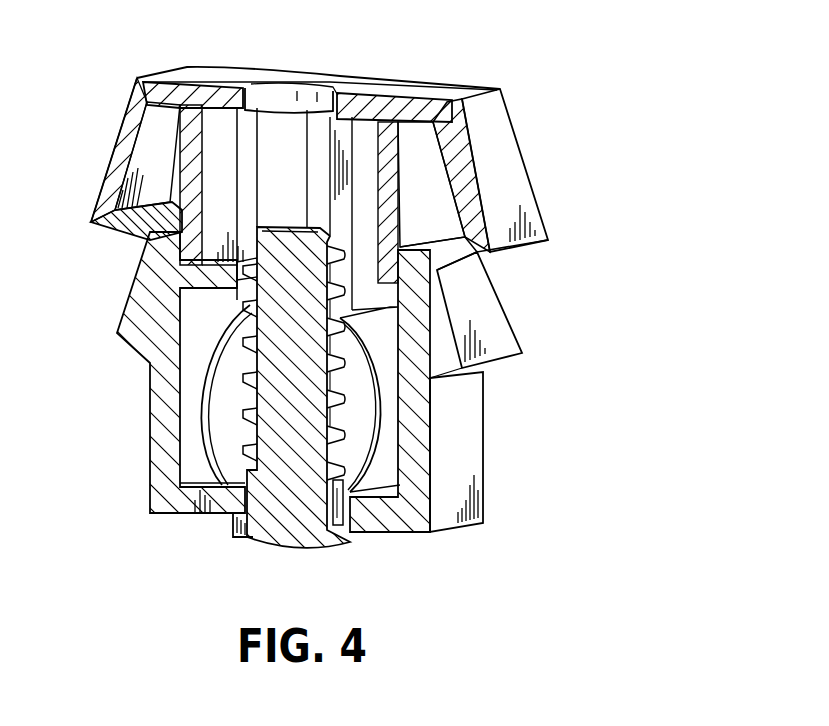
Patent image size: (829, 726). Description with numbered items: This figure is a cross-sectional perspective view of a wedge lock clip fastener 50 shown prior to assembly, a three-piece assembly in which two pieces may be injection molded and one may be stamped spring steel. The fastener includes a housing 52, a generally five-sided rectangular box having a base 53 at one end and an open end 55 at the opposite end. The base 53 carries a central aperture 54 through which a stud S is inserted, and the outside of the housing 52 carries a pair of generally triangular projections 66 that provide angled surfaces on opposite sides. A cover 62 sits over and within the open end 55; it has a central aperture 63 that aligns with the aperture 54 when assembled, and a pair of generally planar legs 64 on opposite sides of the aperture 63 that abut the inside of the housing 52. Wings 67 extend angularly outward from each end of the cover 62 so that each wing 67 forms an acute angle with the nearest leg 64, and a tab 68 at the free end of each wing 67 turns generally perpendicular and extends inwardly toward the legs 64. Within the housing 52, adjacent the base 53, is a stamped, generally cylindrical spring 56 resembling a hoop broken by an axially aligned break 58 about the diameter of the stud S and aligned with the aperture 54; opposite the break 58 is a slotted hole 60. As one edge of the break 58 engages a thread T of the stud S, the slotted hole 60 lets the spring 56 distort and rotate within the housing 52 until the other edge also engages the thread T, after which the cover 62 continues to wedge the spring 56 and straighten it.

The wedge lock clip fastener 50 is at (592, 74).
The housing 52 is at (457, 490).
The base 53 is at (197, 507).
The aperture 54 is at (247, 502).
The open end 55 is at (372, 270).
The spring 56 is at (210, 395).
The break 58 is at (233, 340).
The slotted hole 60 is at (223, 483).
The cover 62 is at (370, 93).
The aperture 63 is at (270, 97).
The leg 64 is at (198, 148).
The projection 66 is at (137, 340).
The wing 67 is at (120, 160).
The tab 68 is at (100, 233).
The thread T is at (237, 265).
The stud S is at (297, 503).